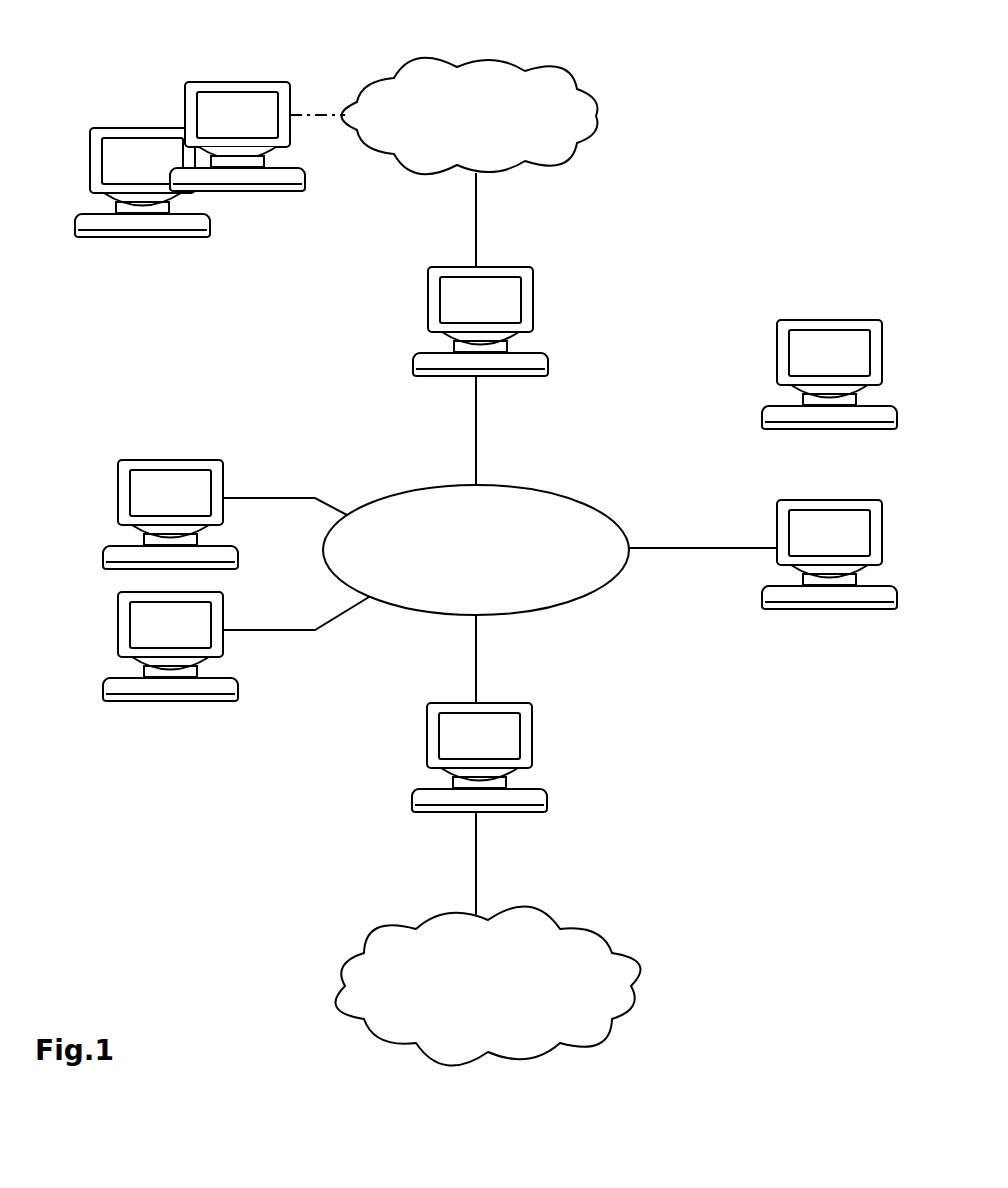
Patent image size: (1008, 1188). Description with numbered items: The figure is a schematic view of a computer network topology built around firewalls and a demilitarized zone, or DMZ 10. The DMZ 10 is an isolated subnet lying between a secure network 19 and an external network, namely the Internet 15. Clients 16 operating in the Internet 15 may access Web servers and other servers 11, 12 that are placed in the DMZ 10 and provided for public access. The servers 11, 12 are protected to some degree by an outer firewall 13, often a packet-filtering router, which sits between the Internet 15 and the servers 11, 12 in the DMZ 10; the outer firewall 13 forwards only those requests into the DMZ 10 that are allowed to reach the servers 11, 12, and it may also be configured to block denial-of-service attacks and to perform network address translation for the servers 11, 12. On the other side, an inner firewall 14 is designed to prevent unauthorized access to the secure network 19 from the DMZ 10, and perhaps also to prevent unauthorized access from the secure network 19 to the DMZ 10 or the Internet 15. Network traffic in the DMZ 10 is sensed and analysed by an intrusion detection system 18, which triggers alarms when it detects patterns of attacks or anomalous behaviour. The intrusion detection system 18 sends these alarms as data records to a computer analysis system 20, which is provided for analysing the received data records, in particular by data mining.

The demilitarized zone (DMZ) 10 is at (513, 505).
The server 11 is at (120, 483).
The server 12 is at (120, 616).
The outer firewall 13 is at (534, 283).
The inner firewall 14 is at (532, 723).
The Internet 15 is at (592, 88).
The clients 16 is at (186, 102).
The intrusion detection system 18 is at (780, 525).
The secure network 19 is at (600, 945).
The computer analysis system 20 is at (795, 321).